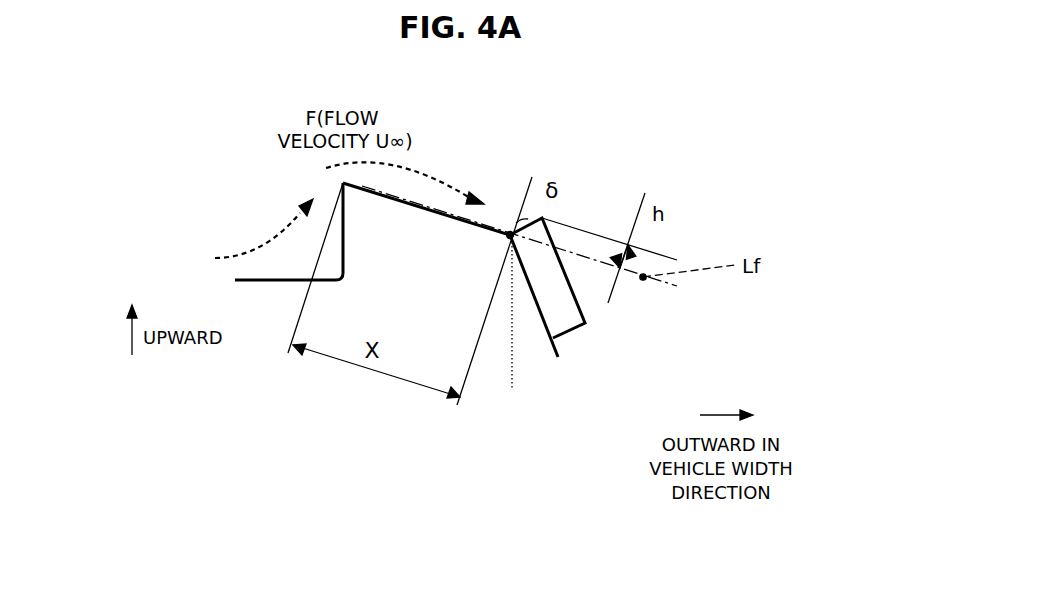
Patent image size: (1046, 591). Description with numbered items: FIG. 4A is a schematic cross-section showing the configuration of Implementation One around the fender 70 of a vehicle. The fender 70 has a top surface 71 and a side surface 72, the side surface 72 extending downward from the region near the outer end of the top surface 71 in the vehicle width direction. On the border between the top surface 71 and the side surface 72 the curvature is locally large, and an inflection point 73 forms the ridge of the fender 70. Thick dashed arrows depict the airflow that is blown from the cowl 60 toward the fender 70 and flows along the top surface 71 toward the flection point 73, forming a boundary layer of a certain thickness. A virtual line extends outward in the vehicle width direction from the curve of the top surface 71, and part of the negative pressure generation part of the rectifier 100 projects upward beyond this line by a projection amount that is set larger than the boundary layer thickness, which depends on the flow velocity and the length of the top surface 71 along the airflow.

The cowl 60 is at (270, 280).
The fender 70 is at (660, 157).
The top surface 71 is at (420, 208).
The side surface 72 is at (545, 308).
The inflection point 73 is at (508, 327).
The rectifier 100 is at (585, 318).